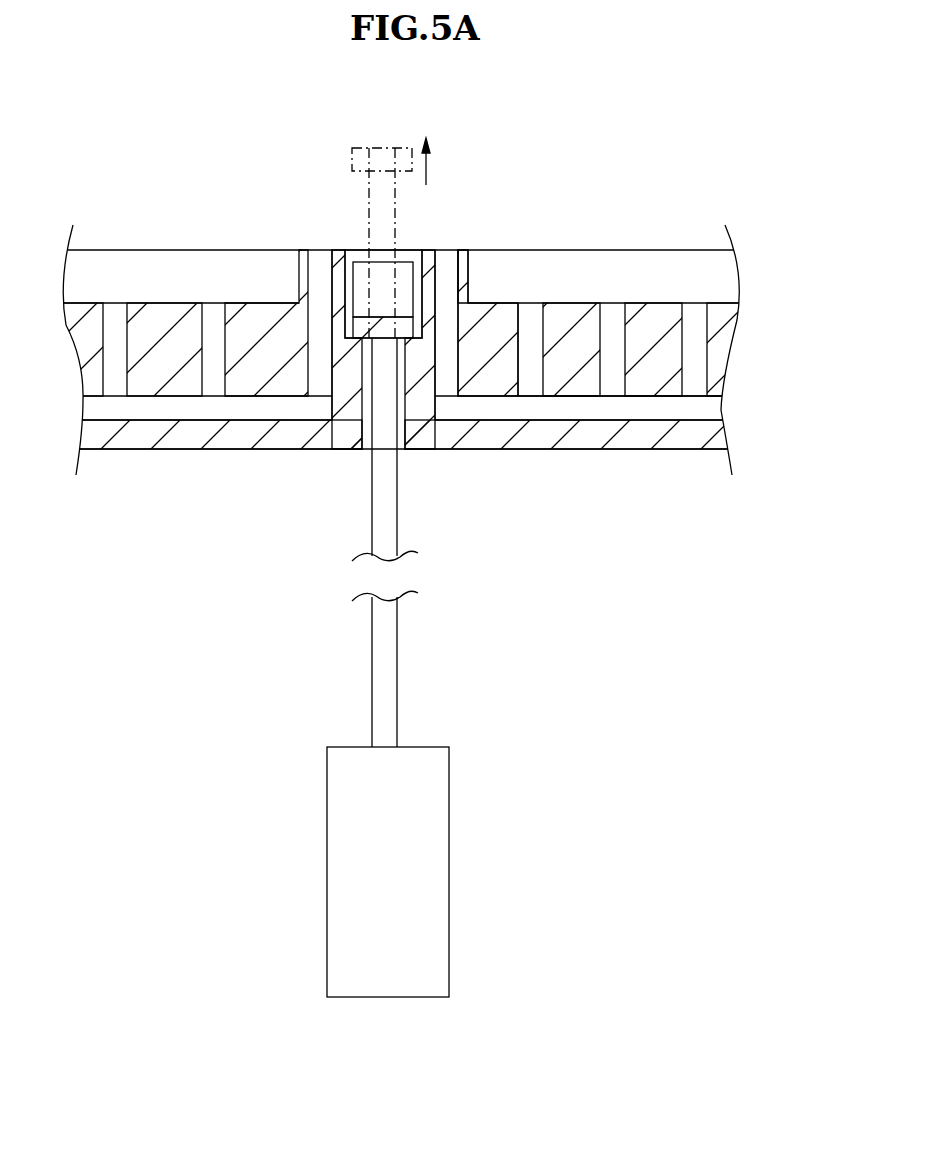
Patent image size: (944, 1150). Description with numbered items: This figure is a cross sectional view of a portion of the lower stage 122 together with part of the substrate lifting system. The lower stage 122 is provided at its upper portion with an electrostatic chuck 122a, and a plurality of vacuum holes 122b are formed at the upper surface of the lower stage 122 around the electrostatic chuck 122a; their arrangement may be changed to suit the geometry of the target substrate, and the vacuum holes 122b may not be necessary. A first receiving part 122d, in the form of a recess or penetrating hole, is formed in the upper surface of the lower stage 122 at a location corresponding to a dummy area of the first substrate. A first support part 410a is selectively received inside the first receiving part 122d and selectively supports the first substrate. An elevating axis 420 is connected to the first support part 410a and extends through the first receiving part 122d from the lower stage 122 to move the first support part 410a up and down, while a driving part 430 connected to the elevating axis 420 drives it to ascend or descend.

The lower stage 122 is at (518, 443).
The electrostatic chuck 122a is at (592, 267).
The vacuum holes 122b is at (693, 320).
The first receiving part 122d is at (352, 257).
The first support part 410a is at (403, 273).
The elevating axis 420 is at (392, 687).
The driving part 430 is at (430, 887).